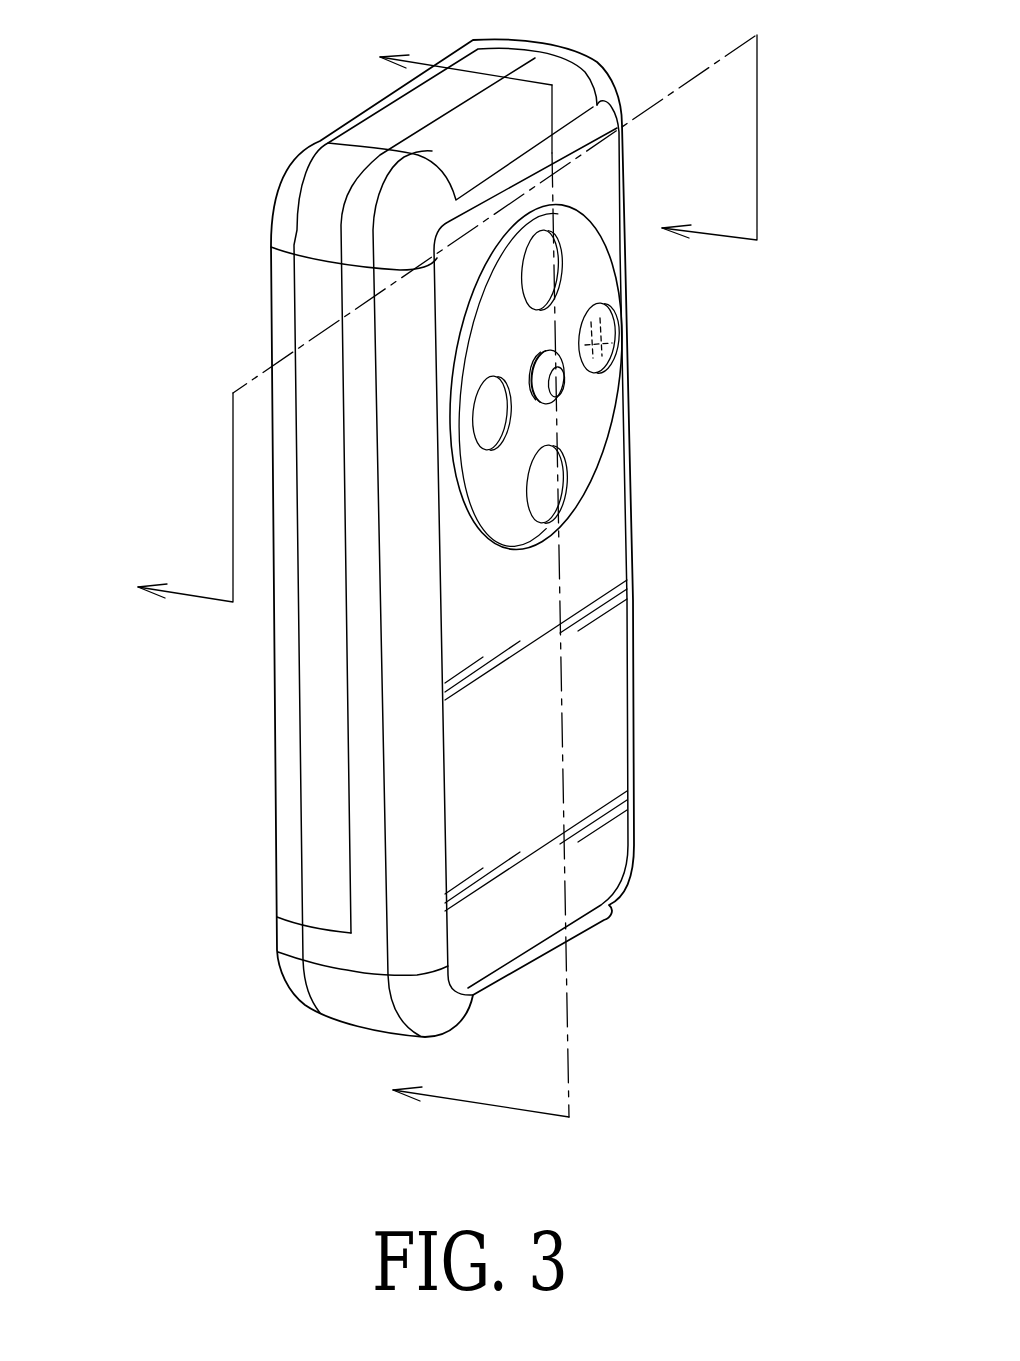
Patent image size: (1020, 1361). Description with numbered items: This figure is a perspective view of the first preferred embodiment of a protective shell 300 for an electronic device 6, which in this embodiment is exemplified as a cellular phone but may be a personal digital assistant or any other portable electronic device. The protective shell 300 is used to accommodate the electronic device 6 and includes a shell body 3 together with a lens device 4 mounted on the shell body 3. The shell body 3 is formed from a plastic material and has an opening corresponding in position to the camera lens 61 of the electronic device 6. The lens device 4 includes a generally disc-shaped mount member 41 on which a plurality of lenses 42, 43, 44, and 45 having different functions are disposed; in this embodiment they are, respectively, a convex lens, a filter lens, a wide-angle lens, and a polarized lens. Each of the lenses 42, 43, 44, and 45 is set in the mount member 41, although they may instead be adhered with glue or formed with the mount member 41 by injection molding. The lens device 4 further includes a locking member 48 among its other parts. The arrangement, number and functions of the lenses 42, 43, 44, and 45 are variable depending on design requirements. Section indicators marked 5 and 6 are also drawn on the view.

The protective shell 300 is at (449, 538).
The shell body 3 is at (490, 140).
The lens device 4 is at (512, 443).
The mount member 41 is at (590, 417).
The lens 42 is at (603, 328).
The lens 43 is at (537, 278).
The lens 44 is at (487, 420).
The lens 45 is at (545, 490).
The locking member 48 is at (557, 380).
The camera lens 61 is at (580, 345).
The section line 5- 5 is at (447, 318).
The electronic device 6 is at (469, 558).